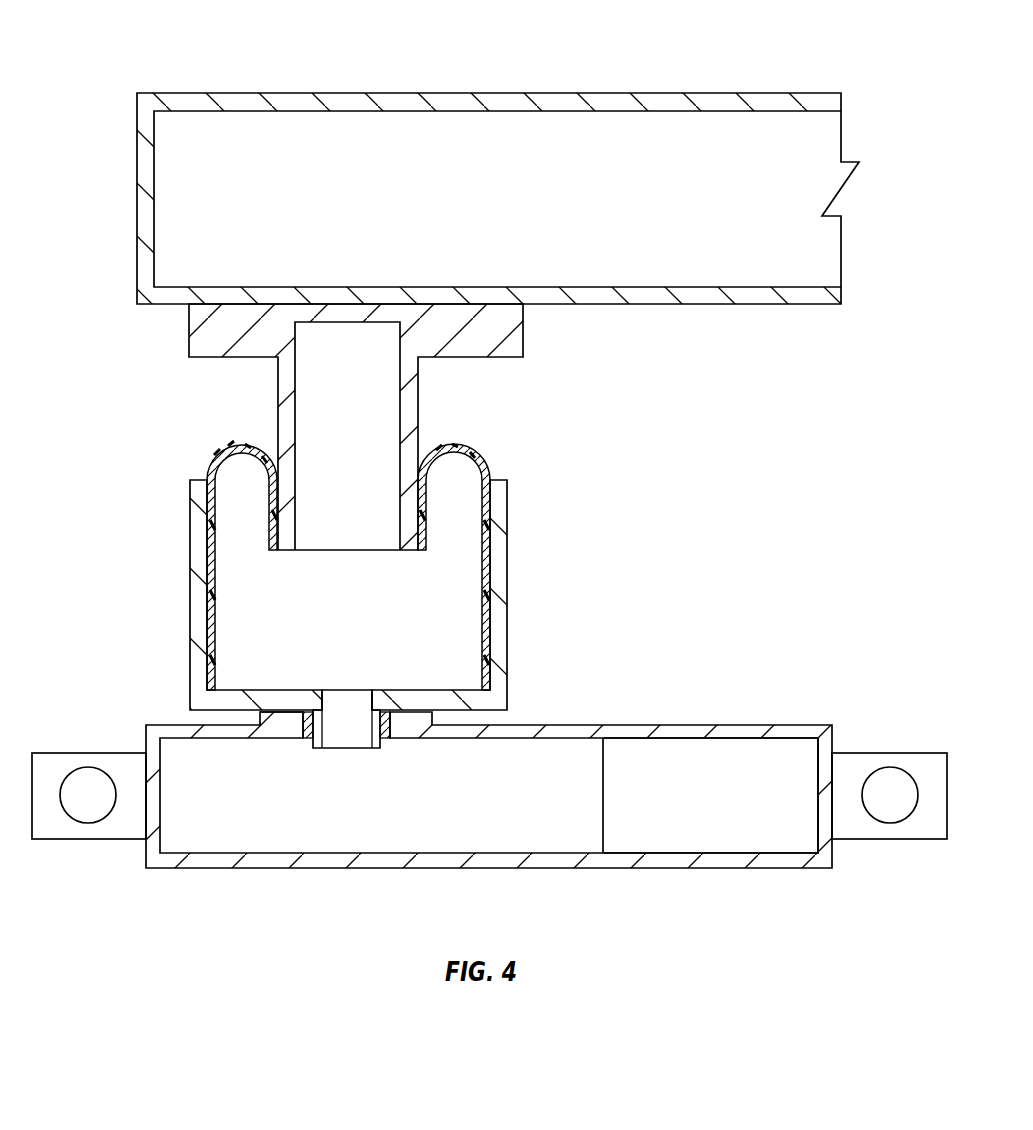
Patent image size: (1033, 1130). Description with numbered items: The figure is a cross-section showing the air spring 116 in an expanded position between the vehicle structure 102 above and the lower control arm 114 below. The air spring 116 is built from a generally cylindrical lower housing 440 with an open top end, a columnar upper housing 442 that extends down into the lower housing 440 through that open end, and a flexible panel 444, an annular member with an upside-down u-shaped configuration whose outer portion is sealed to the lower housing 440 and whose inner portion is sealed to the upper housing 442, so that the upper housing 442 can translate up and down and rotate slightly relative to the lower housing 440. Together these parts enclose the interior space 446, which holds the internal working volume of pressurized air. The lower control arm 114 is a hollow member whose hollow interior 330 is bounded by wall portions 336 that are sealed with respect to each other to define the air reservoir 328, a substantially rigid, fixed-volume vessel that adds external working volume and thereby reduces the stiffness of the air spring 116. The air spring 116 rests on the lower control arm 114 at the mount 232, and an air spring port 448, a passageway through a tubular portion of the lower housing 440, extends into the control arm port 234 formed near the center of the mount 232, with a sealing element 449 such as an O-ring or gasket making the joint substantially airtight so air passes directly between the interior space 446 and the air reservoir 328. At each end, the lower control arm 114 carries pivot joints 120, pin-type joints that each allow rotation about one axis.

The vehicle structure 102 is at (134, 79).
The air spring 116 is at (187, 428).
The upper housing 442 is at (420, 378).
The flexible panel 444 is at (484, 462).
The lower housing 440 is at (508, 560).
The interior space 446 is at (363, 631).
The mount 232 is at (266, 720).
The lower control arm 114 is at (139, 731).
The hollow interior 330 is at (588, 750).
The wall portions 336 is at (722, 730).
The sealing element 449 is at (304, 721).
The control arm port 234 is at (303, 740).
The air spring port 448 is at (348, 748).
The pivot joints 120 is at (87, 823).
The air reservoir 328 is at (241, 831).